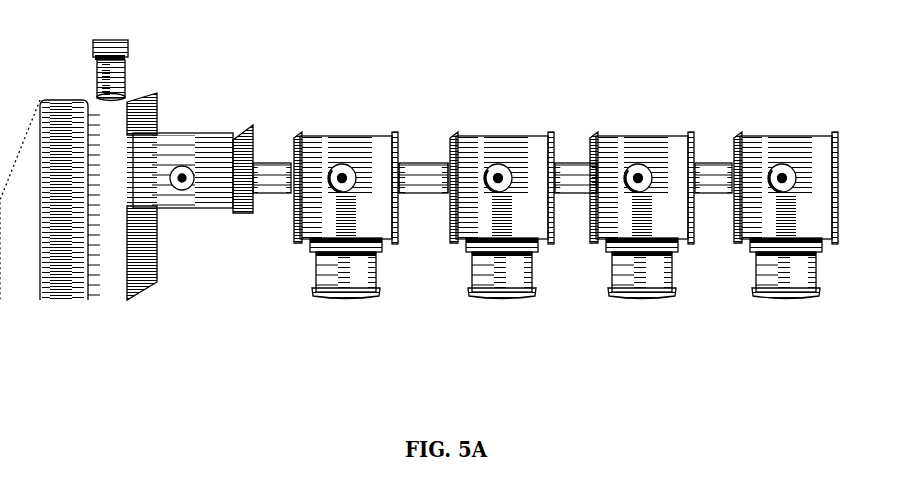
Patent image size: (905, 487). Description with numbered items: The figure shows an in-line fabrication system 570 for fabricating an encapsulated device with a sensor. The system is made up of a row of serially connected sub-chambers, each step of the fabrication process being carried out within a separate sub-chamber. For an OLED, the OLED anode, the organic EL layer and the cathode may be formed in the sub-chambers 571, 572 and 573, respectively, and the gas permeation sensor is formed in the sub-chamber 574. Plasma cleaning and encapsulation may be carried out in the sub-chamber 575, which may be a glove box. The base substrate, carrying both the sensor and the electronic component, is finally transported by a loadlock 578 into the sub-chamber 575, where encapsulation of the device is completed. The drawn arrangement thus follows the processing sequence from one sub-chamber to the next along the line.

The in-line fabrication system 570 is at (222, 374).
The sub-chamber 571 is at (795, 140).
The sub-chamber 572 is at (633, 140).
The sub-chamber 573 is at (507, 140).
The sub-chamber 574 is at (360, 140).
The sub-chamber 575 is at (63, 100).
The loadlock 578 is at (195, 137).